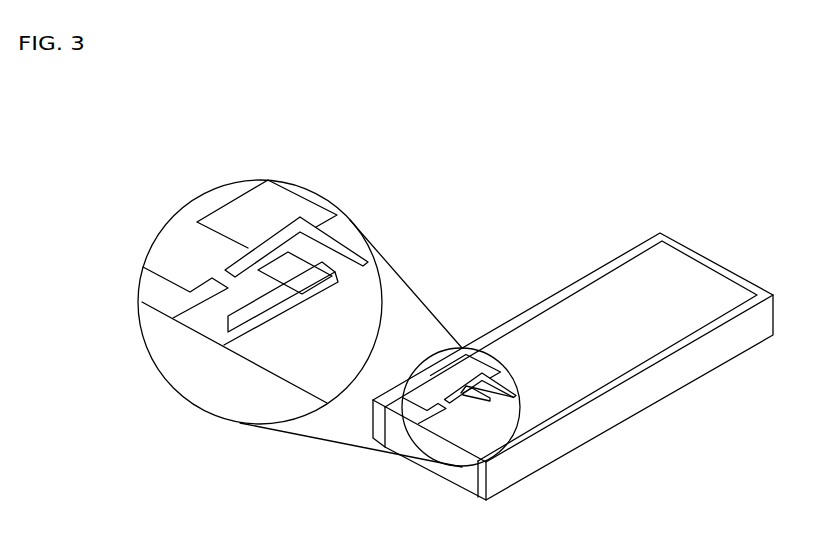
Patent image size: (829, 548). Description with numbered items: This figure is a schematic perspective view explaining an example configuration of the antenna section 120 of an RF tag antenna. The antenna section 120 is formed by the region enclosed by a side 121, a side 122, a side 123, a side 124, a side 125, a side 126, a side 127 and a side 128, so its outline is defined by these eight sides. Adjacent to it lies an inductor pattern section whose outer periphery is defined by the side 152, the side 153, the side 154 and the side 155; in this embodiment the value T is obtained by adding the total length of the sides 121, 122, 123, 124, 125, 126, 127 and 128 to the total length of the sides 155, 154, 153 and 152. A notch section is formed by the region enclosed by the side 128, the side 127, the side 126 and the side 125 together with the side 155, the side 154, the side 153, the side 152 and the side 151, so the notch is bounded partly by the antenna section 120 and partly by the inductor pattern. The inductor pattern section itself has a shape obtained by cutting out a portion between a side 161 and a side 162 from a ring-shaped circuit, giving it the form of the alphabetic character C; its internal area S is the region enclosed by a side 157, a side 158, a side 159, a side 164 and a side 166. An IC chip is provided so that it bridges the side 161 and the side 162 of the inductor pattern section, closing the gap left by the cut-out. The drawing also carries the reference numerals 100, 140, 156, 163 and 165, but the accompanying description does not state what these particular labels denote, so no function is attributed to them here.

The physical quantity sensor device 100 is at (598, 167).
The antenna section 120 is at (567, 313).
The side 121 is at (575, 291).
The side 122 is at (716, 268).
The side 123 is at (668, 346).
The side 124 is at (470, 448).
The side 125 is at (552, 456).
The side 126 is at (506, 352).
The side 127 is at (472, 353).
The side 128 is at (444, 370).
The body 140 is at (634, 398).
The side 151 is at (158, 272).
The side 152 is at (192, 292).
The side 153 is at (272, 247).
The side 154 is at (333, 252).
The side 155 is at (234, 340).
The edge portion 156 is at (228, 327).
The side 157 is at (320, 408).
The side 158 is at (372, 272).
The side 159 is at (345, 347).
The side 161 is at (213, 268).
The side 162 is at (238, 250).
The side portion 163 is at (172, 334).
The side 164 is at (202, 300).
The end portion 165 is at (145, 321).
The side 166 is at (248, 332).